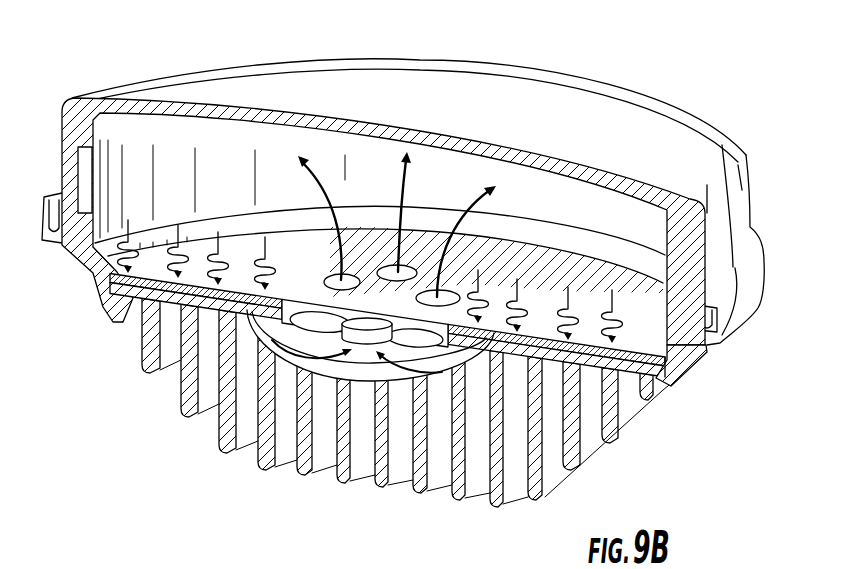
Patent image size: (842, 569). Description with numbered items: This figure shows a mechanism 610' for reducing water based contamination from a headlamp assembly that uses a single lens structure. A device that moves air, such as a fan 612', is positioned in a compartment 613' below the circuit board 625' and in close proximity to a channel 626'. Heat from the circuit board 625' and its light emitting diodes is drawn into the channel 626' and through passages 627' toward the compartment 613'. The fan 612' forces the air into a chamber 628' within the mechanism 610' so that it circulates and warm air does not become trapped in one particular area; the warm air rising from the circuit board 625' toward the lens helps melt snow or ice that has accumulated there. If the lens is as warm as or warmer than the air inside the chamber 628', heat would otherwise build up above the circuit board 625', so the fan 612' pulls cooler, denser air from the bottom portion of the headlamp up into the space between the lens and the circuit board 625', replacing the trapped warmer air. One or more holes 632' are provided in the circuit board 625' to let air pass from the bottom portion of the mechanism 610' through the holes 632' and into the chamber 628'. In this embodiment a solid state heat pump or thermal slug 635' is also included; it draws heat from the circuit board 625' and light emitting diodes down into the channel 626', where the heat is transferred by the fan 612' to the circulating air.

The mechanism for reducing water based contamination 610' is at (394, 176).
The fan 612' is at (360, 430).
The compartment 613' is at (318, 424).
The circuit board 625' is at (712, 371).
The channel 626' is at (368, 391).
The passages 627' is at (394, 436).
The chamber 628' is at (421, 157).
The holes 632' is at (392, 157).
The solid state heat pump or thermal slug 635' is at (703, 397).